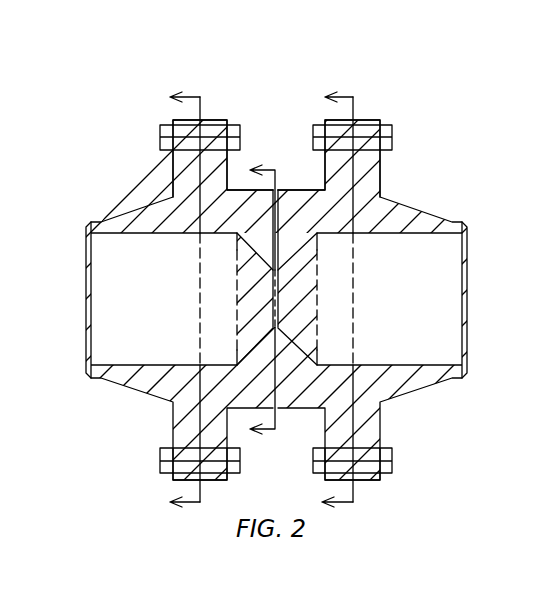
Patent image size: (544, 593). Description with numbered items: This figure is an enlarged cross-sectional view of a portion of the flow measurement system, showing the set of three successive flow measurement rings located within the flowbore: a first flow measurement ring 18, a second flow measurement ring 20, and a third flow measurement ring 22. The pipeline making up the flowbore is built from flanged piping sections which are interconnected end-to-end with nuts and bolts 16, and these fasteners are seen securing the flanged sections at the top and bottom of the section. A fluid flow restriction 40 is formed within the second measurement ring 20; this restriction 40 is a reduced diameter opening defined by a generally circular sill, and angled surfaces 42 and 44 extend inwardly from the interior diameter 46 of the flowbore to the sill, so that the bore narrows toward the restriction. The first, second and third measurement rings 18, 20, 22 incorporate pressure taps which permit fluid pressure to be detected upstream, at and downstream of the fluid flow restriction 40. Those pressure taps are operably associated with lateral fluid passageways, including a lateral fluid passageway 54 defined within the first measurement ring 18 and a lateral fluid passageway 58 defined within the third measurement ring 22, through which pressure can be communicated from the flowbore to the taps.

The nuts and bolts 16 is at (160, 138).
The first flow measurement ring 18 is at (230, 92).
The second flow measurement ring 20 is at (297, 78).
The third flow measurement ring 22 is at (378, 102).
The fluid flow restriction 40 is at (259, 333).
The angled surface 42 is at (259, 254).
The angled surface 44 is at (300, 251).
The interior diameter 46 is at (100, 366).
The lateral fluid passageway 54 is at (202, 178).
The lateral fluid passageway 58 is at (357, 187).